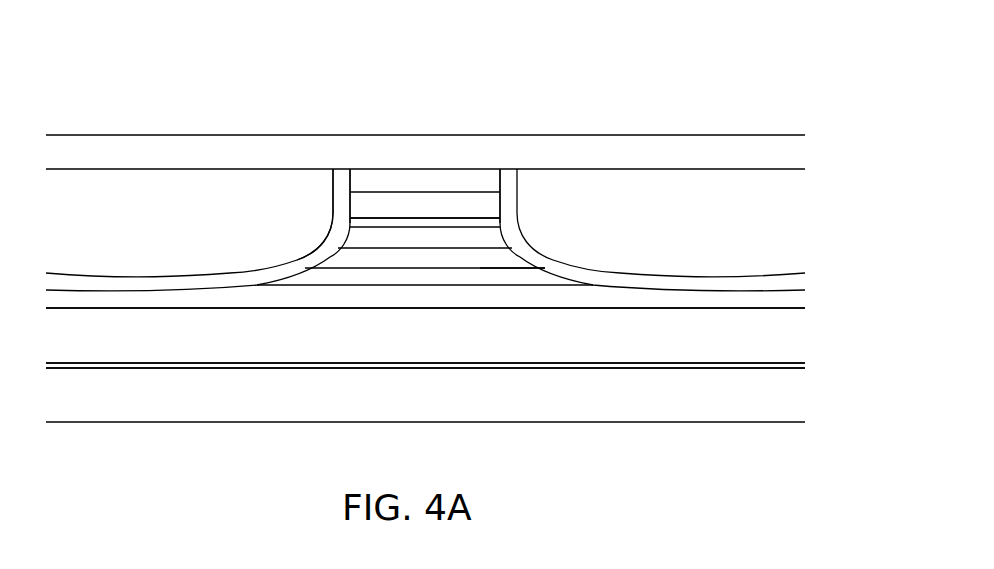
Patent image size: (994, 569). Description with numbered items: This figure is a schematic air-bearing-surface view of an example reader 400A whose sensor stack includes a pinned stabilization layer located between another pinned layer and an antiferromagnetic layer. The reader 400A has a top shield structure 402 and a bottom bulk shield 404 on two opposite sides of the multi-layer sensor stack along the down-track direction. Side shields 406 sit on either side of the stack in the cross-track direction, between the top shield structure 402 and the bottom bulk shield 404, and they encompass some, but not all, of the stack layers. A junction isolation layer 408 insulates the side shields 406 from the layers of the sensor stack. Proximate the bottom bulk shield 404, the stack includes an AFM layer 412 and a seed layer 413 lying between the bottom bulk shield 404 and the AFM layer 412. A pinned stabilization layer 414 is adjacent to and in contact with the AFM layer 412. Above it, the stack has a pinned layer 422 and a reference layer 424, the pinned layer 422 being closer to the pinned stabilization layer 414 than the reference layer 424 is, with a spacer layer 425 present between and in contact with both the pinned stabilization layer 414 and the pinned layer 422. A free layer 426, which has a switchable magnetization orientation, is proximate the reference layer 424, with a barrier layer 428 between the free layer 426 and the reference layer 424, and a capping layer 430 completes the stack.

The reader 400A is at (138, 82).
The top shield structure 402 is at (425, 152).
The bottom bulk shield 404 is at (425, 395).
The side shields 406 is at (200, 222).
The junction isolation layer 408 is at (302, 253).
The AFM layer 412 is at (425, 335).
The seed layer 413 is at (333, 368).
The pinned stabilization layer 414 is at (425, 296).
The pinned layer 422 is at (425, 260).
The reference layer 424 is at (425, 238).
The spacer layer 425 is at (480, 268).
The free layer 426 is at (425, 212).
The barrier layer 428 is at (385, 217).
The capping layer 430 is at (425, 196).